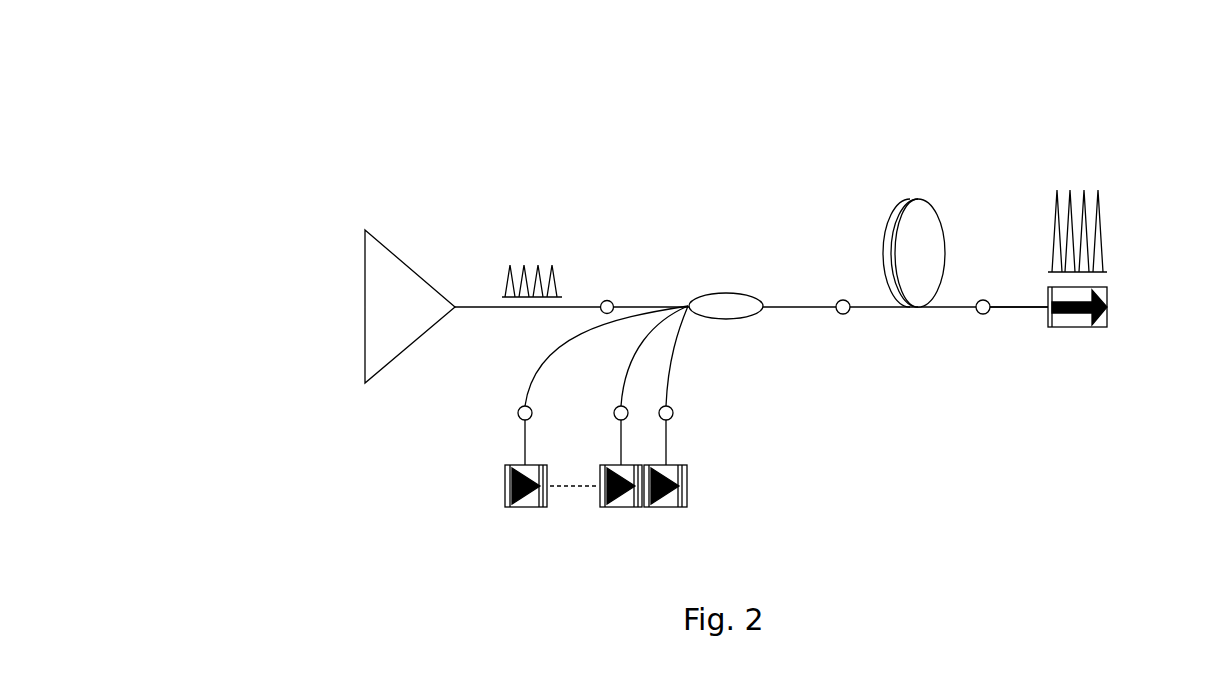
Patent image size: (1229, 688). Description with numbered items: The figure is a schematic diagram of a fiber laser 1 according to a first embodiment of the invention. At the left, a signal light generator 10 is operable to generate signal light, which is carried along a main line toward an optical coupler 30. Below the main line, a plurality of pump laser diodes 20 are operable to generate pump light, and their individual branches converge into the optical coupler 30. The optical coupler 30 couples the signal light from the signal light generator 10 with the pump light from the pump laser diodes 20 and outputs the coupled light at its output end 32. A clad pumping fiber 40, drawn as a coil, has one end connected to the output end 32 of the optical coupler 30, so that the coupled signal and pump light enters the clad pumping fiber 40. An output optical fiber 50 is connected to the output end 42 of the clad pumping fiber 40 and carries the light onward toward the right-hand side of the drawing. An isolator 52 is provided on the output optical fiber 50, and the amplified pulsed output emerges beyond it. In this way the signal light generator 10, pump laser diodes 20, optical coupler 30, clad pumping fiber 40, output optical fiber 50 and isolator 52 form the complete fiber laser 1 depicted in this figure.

The fiber laser 1 is at (1166, 88).
The signal light generator 10 is at (365, 280).
The pump laser diodes 20 is at (505, 486).
The optical coupler 30 is at (727, 293).
The output end of the optical coupler 32 is at (843, 314).
The clad pumping fiber 40 is at (938, 216).
The output end of the clad pumping fiber 42 is at (983, 300).
The output optical fiber 50 is at (1020, 308).
The isolator 52 is at (1078, 327).